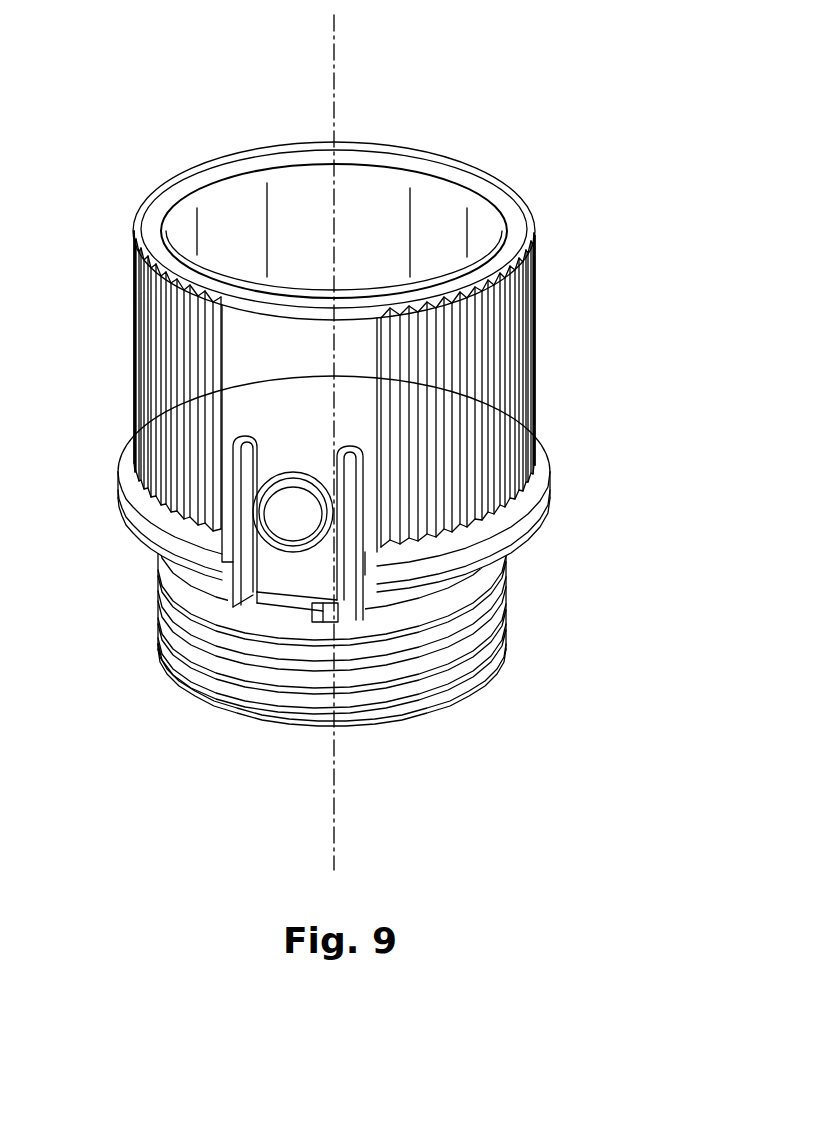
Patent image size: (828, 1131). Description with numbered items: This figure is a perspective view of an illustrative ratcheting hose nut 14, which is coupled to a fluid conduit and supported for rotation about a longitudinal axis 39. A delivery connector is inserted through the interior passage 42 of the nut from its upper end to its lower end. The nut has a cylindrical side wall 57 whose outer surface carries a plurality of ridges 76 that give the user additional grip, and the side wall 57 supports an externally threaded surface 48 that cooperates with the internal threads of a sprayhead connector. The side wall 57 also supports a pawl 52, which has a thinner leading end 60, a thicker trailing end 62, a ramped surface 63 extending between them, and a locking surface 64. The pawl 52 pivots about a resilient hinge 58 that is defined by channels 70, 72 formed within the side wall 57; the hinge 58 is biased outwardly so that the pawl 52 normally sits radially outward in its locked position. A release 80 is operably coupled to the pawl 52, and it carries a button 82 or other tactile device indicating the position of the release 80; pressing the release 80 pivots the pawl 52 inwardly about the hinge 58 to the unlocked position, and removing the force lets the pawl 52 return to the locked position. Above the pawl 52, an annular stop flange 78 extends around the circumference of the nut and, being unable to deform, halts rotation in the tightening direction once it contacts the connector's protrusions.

The ratcheting hose nut 14 is at (510, 103).
The longitudinal axis 39 is at (340, 42).
The interior passage 42 is at (237, 209).
The cylindrical side wall 57 is at (518, 218).
The ridges 76 is at (533, 340).
The hinge 58 is at (296, 447).
The channel 70 is at (238, 445).
The channel 72 is at (351, 455).
The annular stop flange 78 is at (548, 499).
The release 80 is at (268, 545).
The button 82 is at (314, 531).
The externally threaded surface 48 is at (500, 623).
The pawl 52 is at (298, 614).
The ramped surface 63 is at (290, 612).
The leading end 60 is at (252, 603).
The trailing end 62 is at (331, 623).
The locking surface 64 is at (336, 614).